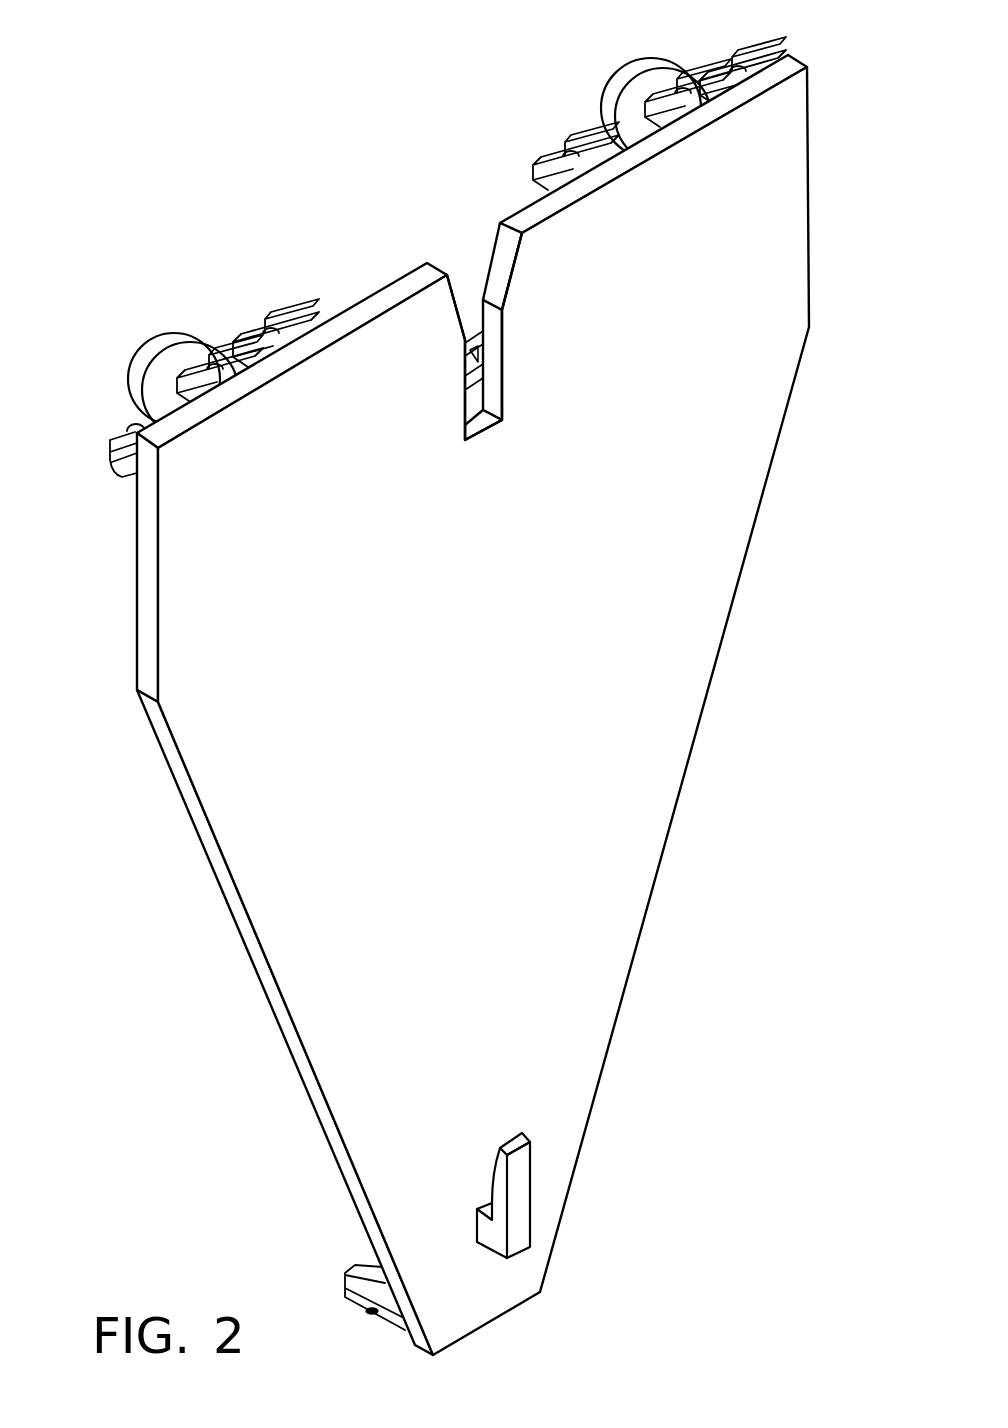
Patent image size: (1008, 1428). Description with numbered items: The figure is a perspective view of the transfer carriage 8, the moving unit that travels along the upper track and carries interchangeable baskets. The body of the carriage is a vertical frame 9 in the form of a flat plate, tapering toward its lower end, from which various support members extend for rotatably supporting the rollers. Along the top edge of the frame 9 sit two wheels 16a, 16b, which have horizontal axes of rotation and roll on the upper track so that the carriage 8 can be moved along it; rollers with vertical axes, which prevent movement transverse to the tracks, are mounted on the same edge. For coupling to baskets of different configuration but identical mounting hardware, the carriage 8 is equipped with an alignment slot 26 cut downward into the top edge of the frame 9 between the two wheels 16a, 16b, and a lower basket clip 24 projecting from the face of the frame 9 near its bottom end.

The transfer carriage 8 is at (803, 442).
The vertical frame 9 is at (689, 762).
The wheel 16a is at (143, 347).
The wheel 16b is at (607, 112).
The lower basket clip 24 is at (522, 1231).
The alignment slot 26 is at (505, 360).